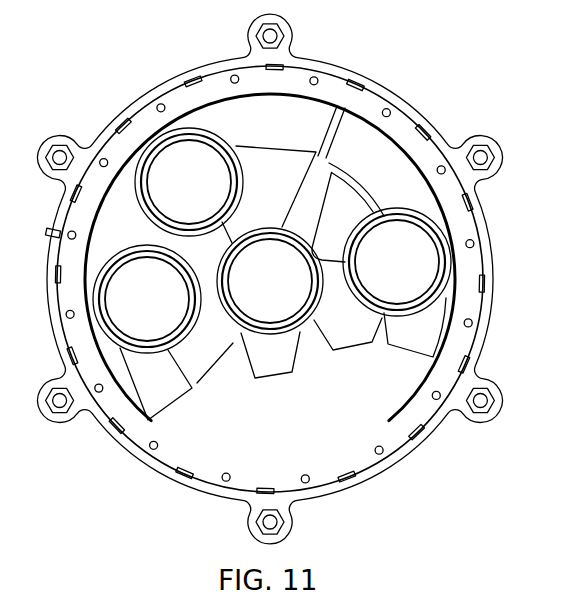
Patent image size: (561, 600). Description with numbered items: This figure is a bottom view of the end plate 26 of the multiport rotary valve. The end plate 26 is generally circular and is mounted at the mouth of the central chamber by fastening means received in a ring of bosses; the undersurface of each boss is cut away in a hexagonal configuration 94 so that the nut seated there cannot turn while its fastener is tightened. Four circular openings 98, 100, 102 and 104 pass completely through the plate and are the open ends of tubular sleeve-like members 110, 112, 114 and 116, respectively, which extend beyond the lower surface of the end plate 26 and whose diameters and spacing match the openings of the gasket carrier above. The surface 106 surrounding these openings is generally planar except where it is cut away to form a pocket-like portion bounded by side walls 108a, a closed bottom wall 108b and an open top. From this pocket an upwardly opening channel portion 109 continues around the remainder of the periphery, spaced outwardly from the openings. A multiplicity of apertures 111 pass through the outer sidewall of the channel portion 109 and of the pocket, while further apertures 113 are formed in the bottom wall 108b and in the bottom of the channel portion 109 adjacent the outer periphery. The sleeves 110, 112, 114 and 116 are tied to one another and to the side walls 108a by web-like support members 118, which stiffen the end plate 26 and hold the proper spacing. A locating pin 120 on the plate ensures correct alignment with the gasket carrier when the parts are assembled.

The end plate 26 is at (378, 70).
The hexagonal configuration 94 is at (290, 30).
The circular opening 98 is at (260, 236).
The circular opening 100 is at (134, 340).
The circular opening 102 is at (205, 140).
The circular opening 104 is at (393, 212).
The surface 106 is at (378, 137).
The side walls 108a is at (166, 398).
The closed bottom wall 108b is at (352, 430).
The channel portion 109 is at (468, 231).
The tubular sleeve-like member 110 is at (313, 248).
The apertures 111 is at (455, 146).
The tubular sleeve-like member 112 is at (106, 262).
The apertures 113 is at (478, 256).
The tubular sleeve-like member 114 is at (228, 142).
The tubular sleeve-like member 116 is at (415, 327).
The support members 118 is at (328, 125).
The locating pin 120 is at (49, 242).